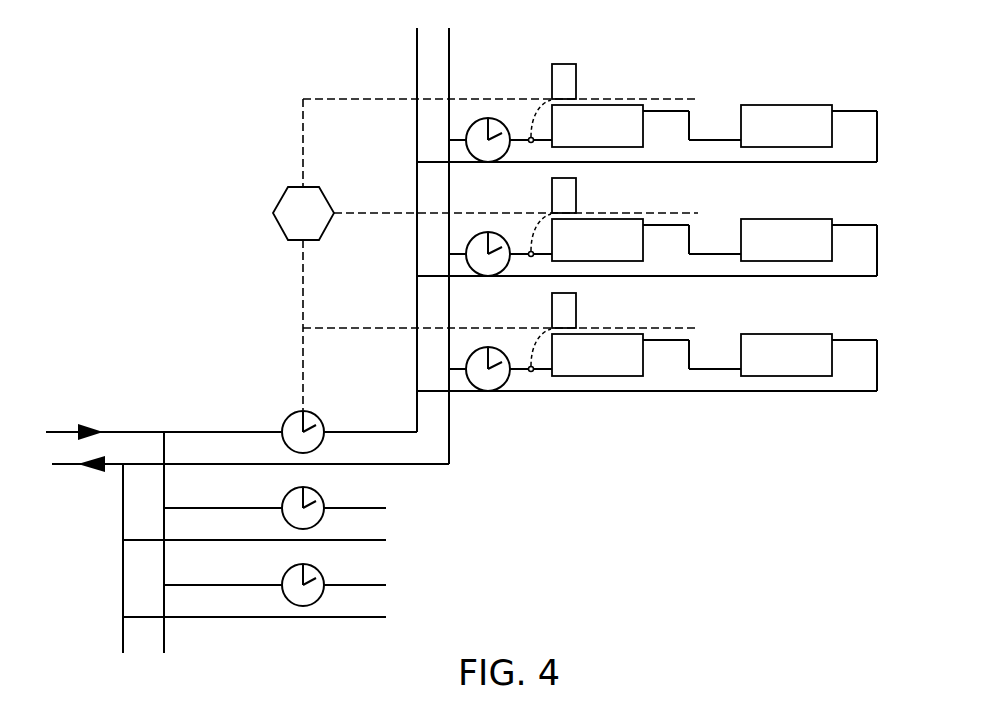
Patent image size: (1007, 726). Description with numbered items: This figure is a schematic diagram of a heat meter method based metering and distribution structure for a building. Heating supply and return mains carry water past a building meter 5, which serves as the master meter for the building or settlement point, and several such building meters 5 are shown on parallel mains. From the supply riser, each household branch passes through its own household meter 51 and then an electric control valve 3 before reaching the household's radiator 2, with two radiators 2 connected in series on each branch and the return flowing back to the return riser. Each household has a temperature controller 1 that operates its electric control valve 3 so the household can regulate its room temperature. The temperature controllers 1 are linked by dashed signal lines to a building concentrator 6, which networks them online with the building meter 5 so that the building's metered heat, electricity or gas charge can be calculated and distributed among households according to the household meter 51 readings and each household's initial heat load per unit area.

The temperature controller 1 is at (564, 196).
The radiator 2 is at (692, 240).
The electric control valve 3 is at (540, 236).
The building meter 5 is at (305, 499).
The household meter 51 is at (488, 268).
The building concentrator 6 is at (303, 213).